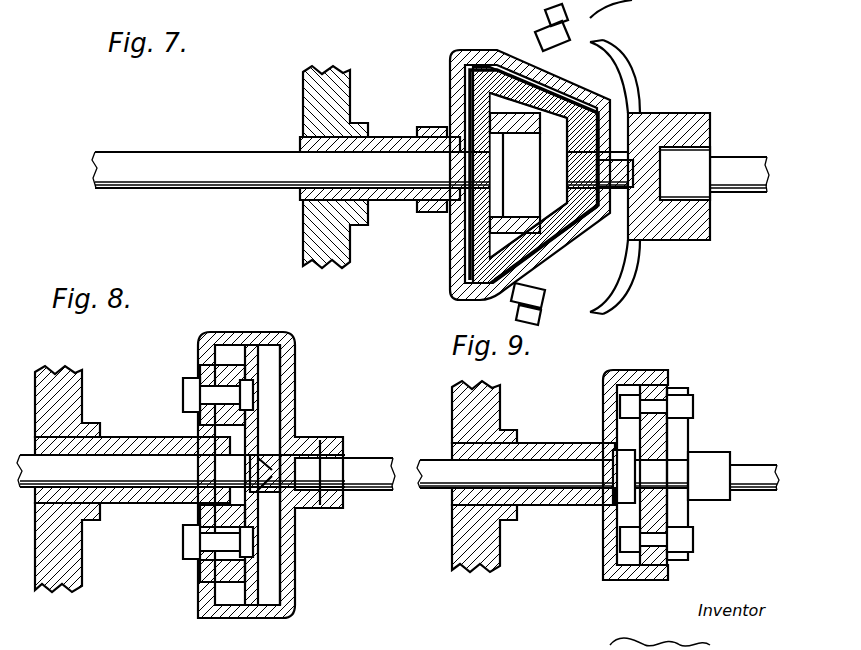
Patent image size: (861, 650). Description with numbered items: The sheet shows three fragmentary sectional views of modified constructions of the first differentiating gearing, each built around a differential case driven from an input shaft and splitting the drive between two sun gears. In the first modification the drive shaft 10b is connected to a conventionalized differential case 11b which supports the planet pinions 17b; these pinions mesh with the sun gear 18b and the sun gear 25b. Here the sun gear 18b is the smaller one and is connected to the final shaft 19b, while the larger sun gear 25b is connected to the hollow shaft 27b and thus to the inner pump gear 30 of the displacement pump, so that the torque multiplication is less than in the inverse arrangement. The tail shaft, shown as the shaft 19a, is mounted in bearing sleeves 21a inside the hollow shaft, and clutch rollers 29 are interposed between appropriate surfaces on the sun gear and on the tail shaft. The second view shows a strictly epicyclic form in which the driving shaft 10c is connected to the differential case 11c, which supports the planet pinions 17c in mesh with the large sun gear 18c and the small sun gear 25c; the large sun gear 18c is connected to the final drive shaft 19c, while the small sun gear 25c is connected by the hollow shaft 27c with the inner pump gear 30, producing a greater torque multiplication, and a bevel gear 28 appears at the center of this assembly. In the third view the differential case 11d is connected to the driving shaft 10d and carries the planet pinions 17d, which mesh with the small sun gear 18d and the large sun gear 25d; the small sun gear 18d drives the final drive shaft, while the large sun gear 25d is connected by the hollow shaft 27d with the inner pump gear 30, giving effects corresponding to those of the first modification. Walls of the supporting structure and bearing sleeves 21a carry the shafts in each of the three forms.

In FIG. 7, the drive shaft 10b is at (753, 162).
In FIG. 8, the driving shaft 10c is at (380, 446).
In FIG. 9, the driving shaft 10d is at (770, 474).
In FIG. 7, the differential case 11b is at (468, 55).
In FIG. 8, the differential case 11c is at (281, 319).
In FIG. 9, the differential case 11d is at (677, 431).
In FIG. 7, the planet pinions 17b is at (533, 83).
In FIG. 8, the planet pinions 17c is at (218, 372).
In FIG. 9, the planet pinions 17d is at (670, 396).
In FIG. 7, the sun gear 18b is at (593, 113).
In FIG. 8, the large sun gear 18c is at (272, 382).
In FIG. 9, the small sun gear 18d is at (648, 458).
In FIG. 9, the tail shaft 19a is at (428, 486).
In FIG. 7, the final shaft 19b is at (195, 147).
In FIG. 8, the final drive shaft 19c is at (76, 467).
In FIG. 7, the bearing sleeves 21a is at (435, 147).
In FIG. 8, the bearing sleeves 21a is at (176, 445).
In FIG. 9, the bearing sleeves 21a is at (584, 457).
In FIG. 7, the sun gear 25b is at (480, 103).
In FIG. 8, the small sun gear 25c is at (243, 437).
In FIG. 9, the large sun gear 25d is at (666, 351).
In FIG. 7, the hollow shaft 27b is at (420, 200).
In FIG. 8, the hollow shaft 27c is at (126, 503).
In FIG. 9, the hollow shaft 27d is at (546, 507).
In FIG. 8, the bevel gear 28 is at (246, 447).
In FIG. 7, the clutch rollers 29 is at (513, 137).
In FIG. 7, the inner pump gear 30 is at (318, 110).
In FIG. 8, the inner pump gear 30 is at (68, 565).